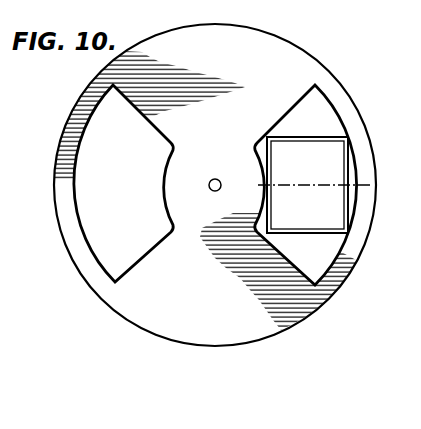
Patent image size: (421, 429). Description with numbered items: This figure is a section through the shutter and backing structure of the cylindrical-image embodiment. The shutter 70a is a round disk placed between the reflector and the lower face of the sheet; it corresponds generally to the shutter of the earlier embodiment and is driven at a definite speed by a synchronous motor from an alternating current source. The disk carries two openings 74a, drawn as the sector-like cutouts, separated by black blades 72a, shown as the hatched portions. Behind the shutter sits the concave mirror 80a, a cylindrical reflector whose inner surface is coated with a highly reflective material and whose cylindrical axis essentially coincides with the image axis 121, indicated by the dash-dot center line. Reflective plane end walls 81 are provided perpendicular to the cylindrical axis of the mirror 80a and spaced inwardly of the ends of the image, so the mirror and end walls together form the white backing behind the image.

The shutter 70a is at (184, 344).
The black blades 72a is at (278, 48).
The openings 74a is at (97, 259).
The concave mirror 80a is at (331, 137).
The reflective plane end walls 81 is at (355, 215).
The image axis 121 is at (336, 188).